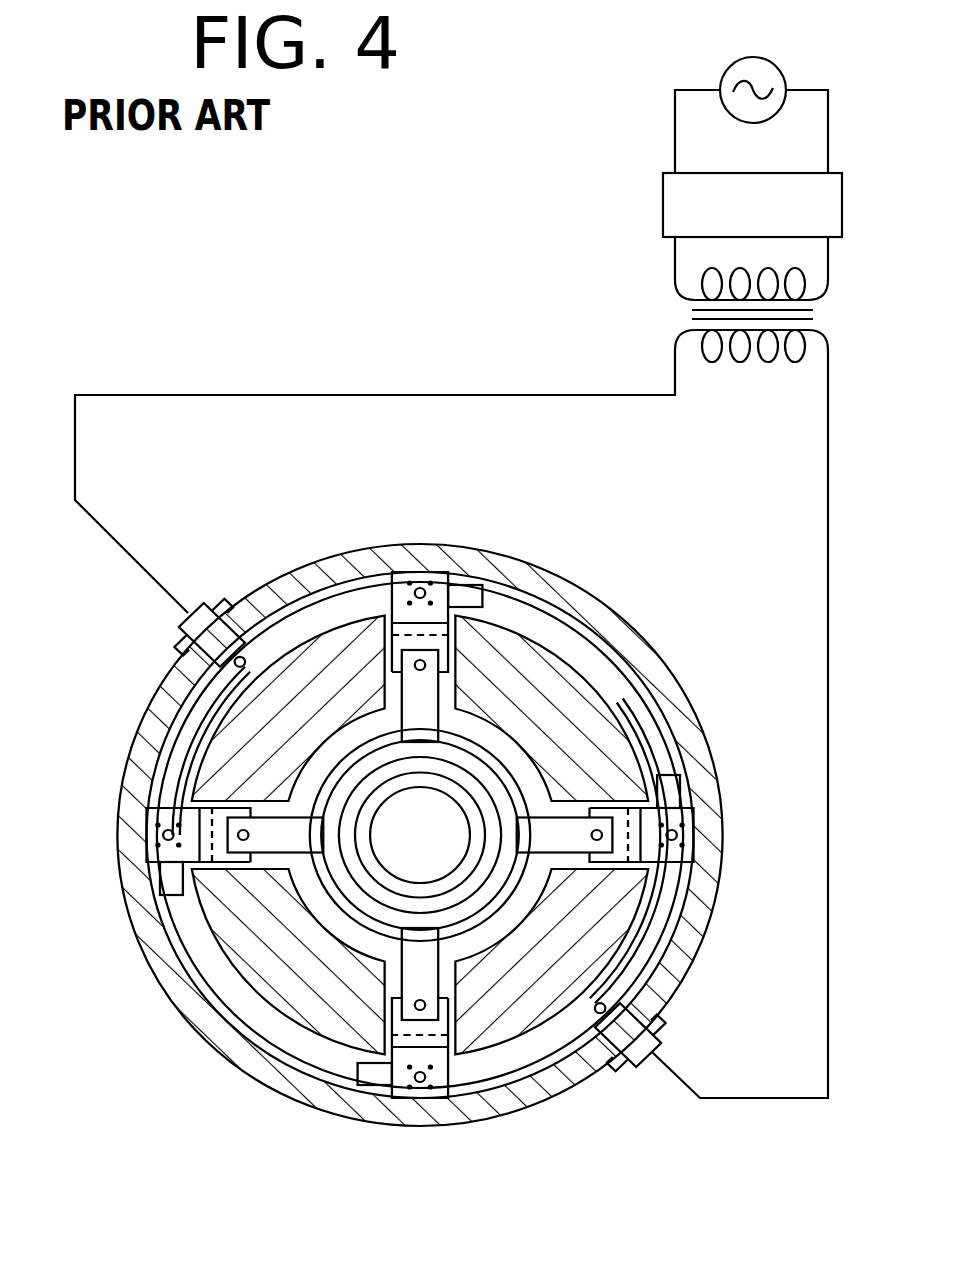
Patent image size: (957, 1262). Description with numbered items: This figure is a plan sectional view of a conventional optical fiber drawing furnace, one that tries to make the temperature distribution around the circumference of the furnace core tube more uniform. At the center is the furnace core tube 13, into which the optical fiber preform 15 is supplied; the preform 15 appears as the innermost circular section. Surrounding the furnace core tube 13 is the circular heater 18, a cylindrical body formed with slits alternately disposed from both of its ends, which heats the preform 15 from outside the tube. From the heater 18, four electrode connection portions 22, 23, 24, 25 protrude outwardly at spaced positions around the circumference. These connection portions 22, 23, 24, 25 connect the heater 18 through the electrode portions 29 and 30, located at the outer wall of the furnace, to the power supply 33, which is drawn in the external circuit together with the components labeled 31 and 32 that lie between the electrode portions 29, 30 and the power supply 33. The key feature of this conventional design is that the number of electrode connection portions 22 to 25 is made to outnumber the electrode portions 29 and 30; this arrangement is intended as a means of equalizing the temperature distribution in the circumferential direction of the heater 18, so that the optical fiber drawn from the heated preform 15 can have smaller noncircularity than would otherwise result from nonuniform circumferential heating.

The furnace core tube 13 is at (465, 768).
The optical fiber preform 15 is at (452, 872).
The heater 18 is at (325, 925).
The electrode connection portion 22 is at (548, 828).
The electrode connection portion 23 is at (405, 968).
The electrode connection portion 24 is at (280, 825).
The electrode connection portion 25 is at (408, 704).
The electrode portion 29 is at (643, 1045).
The electrode portion 30 is at (208, 640).
The transformer 31 is at (677, 312).
The control circuit 32 is at (697, 217).
The power supply 33 is at (722, 74).